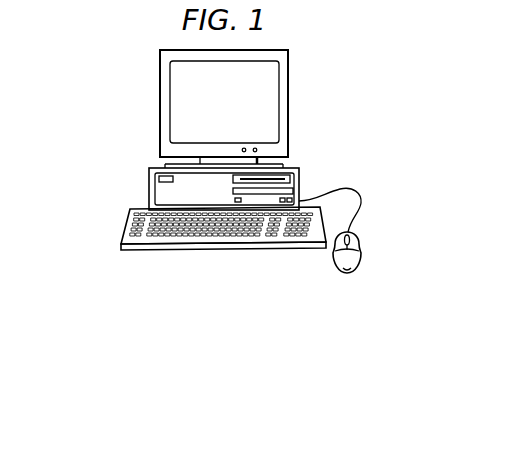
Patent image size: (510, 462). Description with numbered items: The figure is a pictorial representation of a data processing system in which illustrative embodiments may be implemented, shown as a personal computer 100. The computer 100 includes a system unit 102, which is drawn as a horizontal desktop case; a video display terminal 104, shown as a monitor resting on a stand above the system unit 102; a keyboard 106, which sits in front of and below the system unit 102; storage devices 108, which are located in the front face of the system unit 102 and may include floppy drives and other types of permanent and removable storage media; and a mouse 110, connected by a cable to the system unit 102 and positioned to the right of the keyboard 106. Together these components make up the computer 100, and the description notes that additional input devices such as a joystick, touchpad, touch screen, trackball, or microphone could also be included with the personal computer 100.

The computer 100 is at (104, 92).
The system unit 102 is at (215, 179).
The video display terminal 104 is at (289, 102).
The keyboard 106 is at (145, 249).
The storage devices 108 is at (272, 180).
The mouse 110 is at (347, 273).